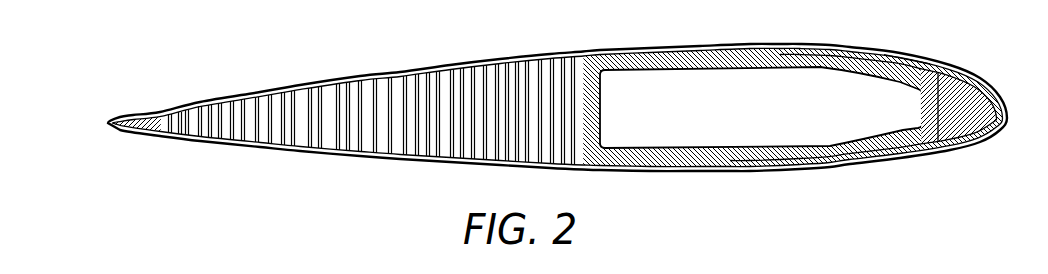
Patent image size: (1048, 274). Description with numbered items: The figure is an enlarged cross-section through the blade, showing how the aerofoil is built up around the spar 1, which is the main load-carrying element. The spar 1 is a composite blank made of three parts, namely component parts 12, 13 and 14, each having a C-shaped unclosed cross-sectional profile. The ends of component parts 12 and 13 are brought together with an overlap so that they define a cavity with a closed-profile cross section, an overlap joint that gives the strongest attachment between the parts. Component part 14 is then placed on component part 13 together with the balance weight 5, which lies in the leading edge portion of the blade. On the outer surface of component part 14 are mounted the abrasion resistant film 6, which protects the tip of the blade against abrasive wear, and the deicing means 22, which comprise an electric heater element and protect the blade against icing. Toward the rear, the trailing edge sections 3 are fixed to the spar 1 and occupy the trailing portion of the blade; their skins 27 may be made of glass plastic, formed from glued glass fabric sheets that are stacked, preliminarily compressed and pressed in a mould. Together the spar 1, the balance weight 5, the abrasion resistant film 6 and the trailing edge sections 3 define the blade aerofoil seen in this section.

The spar 1 is at (634, 50).
The trailing edge sections 3 is at (481, 59).
The skins 27 is at (564, 53).
The component part 14 is at (728, 49).
The component part 13 is at (786, 62).
The component part 12 is at (783, 64).
The balance weight 5 is at (978, 90).
The deicing means 22 is at (940, 66).
The abrasion resistant film 6 is at (908, 57).